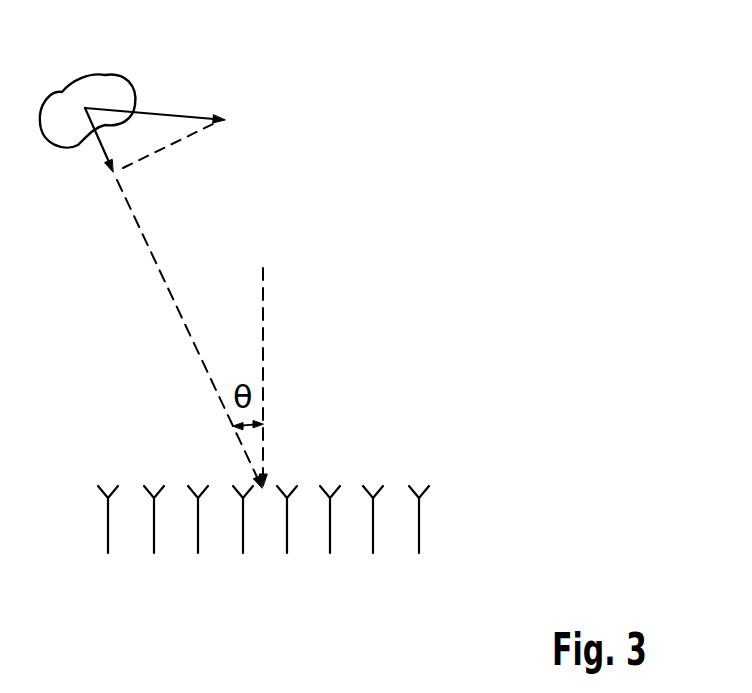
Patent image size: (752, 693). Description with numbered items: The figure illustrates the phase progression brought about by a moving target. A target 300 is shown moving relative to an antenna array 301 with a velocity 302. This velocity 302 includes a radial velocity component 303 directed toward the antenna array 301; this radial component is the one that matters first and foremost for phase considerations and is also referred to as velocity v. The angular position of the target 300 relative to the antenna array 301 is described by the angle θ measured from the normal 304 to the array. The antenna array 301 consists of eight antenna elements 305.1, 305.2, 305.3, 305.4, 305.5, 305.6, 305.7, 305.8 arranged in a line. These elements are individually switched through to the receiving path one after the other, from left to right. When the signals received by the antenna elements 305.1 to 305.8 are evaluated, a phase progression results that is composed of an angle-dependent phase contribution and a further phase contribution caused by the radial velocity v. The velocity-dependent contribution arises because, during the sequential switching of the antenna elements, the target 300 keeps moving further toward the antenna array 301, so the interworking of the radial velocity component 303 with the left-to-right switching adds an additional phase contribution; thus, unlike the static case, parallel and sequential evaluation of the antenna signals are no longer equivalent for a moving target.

The target 300 is at (114, 75).
The antenna array 301 is at (433, 468).
The velocity 302 is at (163, 115).
The radial velocity component 303 is at (101, 151).
The normal 304 is at (263, 318).
The antenna element 305.1 is at (108, 538).
The antenna element 305.2 is at (154, 540).
The antenna element 305.3 is at (198, 538).
The antenna element 305.4 is at (243, 540).
The antenna element 305.5 is at (287, 538).
The antenna element 305.6 is at (330, 538).
The antenna element 305.7 is at (373, 538).
The antenna element 305.8 is at (421, 533).